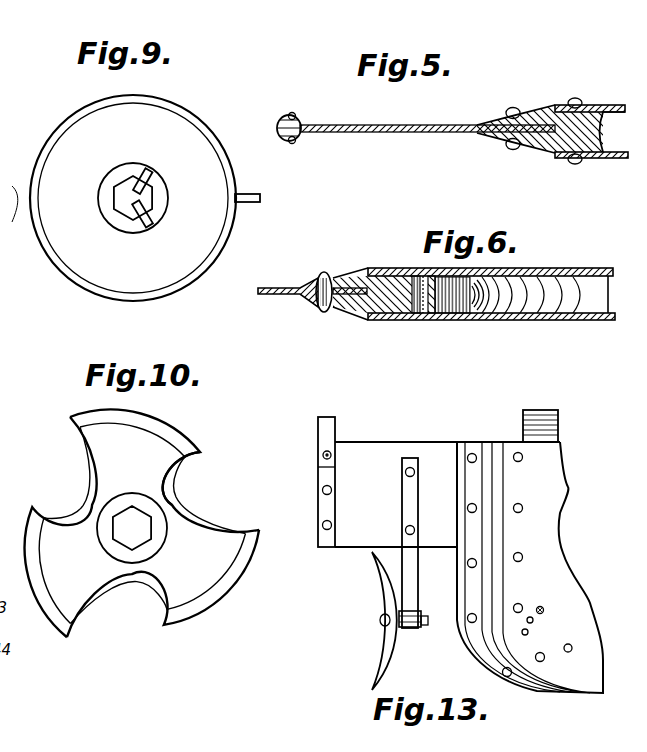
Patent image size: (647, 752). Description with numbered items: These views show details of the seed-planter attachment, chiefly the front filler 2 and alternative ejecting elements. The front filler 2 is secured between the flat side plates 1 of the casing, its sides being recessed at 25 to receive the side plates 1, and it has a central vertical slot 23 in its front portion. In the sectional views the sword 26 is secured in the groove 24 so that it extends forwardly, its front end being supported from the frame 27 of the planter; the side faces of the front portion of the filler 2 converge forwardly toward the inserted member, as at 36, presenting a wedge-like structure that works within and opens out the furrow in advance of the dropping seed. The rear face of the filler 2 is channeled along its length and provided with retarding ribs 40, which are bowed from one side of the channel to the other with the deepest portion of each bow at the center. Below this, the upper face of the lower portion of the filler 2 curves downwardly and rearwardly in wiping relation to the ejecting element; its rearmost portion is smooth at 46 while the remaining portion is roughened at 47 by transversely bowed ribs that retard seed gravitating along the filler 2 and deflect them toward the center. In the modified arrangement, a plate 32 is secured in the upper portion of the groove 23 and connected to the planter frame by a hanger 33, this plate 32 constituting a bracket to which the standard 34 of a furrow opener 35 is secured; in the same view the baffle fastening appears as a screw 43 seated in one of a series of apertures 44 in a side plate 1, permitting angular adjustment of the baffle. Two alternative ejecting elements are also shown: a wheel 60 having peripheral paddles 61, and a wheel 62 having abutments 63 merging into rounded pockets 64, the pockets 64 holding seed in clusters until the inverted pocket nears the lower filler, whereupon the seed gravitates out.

In FIG. 5, the side plates 1 is at (612, 107).
In FIG. 13, the side plates 1 is at (541, 507).
In FIG. 5, the front filler 2 is at (563, 104).
In FIG. 6, the front filler 2 is at (378, 273).
In FIG. 6, the central vertical slot 23 is at (333, 275).
In FIG. 5, the groove 24 is at (530, 141).
In FIG. 5, the recesses 25 is at (592, 118).
In FIG. 6, the recesses 25 is at (395, 306).
In FIG. 5, the sword 26 is at (392, 124).
In FIG. 6, the frame 27 is at (272, 288).
In FIG. 13, the plate 32 is at (365, 458).
In FIG. 13, the hanger 33 is at (320, 424).
In FIG. 13, the standard 34 is at (404, 577).
In FIG. 13, the furrow opener 35 is at (388, 648).
In FIG. 5, the converging side faces 36 is at (526, 108).
In FIG. 5, the retarding ribs 40 is at (624, 159).
In FIG. 13, the screw 43 is at (545, 609).
In FIG. 13, the apertures 44 is at (536, 621).
In FIG. 6, the smooth face 46 is at (598, 299).
In FIG. 6, the roughened surface 47 is at (535, 284).
In FIG. 9, the wheel 60 is at (198, 117).
In FIG. 9, the peripheral paddles 61 is at (247, 195).
In FIG. 10, the wheel 62 is at (158, 452).
In FIG. 10, the abutments 63 is at (247, 530).
In FIG. 10, the rounded pockets 64 is at (176, 496).